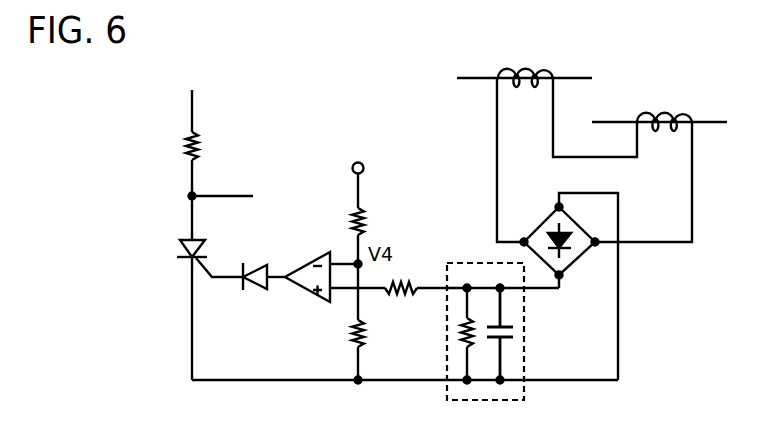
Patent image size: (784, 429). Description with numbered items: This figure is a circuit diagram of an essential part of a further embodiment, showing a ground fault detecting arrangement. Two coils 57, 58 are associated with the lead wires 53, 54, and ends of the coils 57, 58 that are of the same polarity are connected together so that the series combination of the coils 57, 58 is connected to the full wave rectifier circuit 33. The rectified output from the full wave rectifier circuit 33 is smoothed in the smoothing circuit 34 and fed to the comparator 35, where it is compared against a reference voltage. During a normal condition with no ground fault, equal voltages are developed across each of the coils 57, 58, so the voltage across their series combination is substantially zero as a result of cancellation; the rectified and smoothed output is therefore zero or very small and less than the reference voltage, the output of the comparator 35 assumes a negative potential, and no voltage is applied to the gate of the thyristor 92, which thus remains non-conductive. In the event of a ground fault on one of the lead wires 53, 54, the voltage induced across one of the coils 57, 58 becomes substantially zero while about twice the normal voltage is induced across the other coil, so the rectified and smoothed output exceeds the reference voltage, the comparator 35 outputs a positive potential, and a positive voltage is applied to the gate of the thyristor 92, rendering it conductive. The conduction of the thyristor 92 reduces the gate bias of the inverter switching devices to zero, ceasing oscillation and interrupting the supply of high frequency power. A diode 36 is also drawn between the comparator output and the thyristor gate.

The thyristor 92 is at (181, 248).
The diode 36 is at (256, 282).
The comparator 35 is at (314, 298).
The smoothing circuit 34 is at (525, 327).
The full wave rectifier circuit 33 is at (574, 262).
The coil 57 is at (527, 72).
The lead wire 53 is at (572, 78).
The coil 58 is at (660, 116).
The lead wire 54 is at (706, 120).